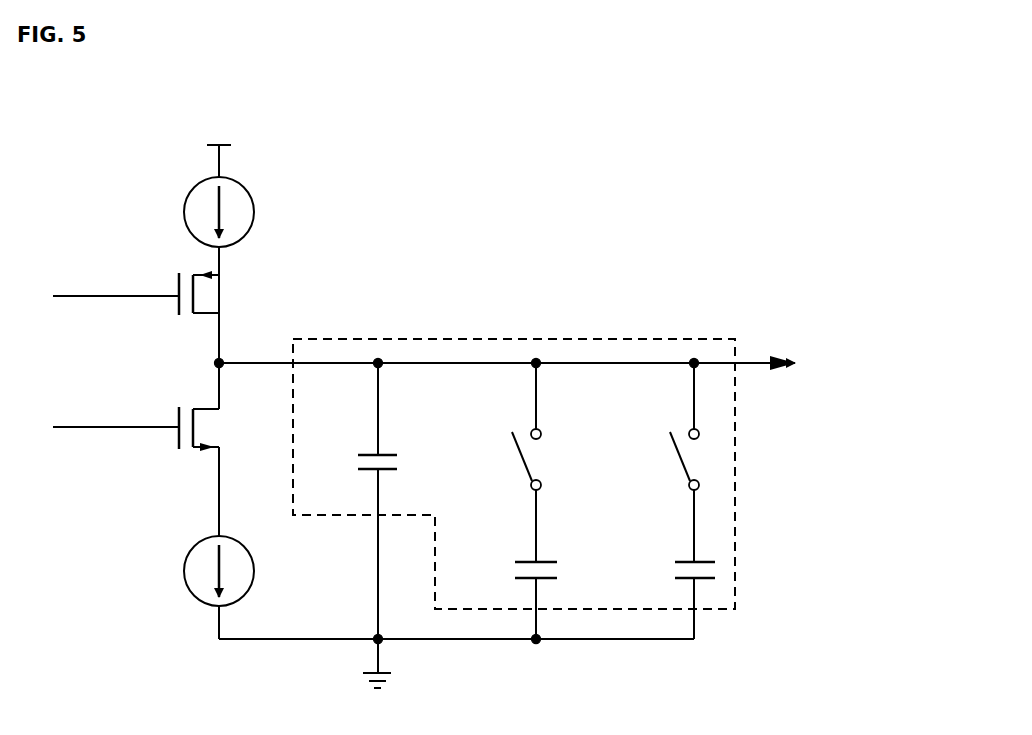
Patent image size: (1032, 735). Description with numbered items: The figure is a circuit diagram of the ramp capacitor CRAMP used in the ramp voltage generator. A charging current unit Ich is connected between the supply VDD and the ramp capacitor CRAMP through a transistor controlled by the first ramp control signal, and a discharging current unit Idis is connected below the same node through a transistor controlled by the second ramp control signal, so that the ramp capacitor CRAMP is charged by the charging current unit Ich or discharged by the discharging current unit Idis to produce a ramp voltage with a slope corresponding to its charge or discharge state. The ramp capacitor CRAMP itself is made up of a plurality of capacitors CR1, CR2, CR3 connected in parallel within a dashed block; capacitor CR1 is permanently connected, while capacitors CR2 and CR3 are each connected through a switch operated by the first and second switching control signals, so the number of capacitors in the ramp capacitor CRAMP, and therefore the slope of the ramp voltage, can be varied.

The supply voltage VDD is at (217, 144).
The charging current unit Ich is at (276, 180).
The discharging current unit Idis is at (276, 543).
The ramp capacitor CRAMP is at (563, 339).
The capacitor CR1 is at (351, 501).
The capacitor CR2 is at (507, 596).
The capacitor CR3 is at (665, 596).